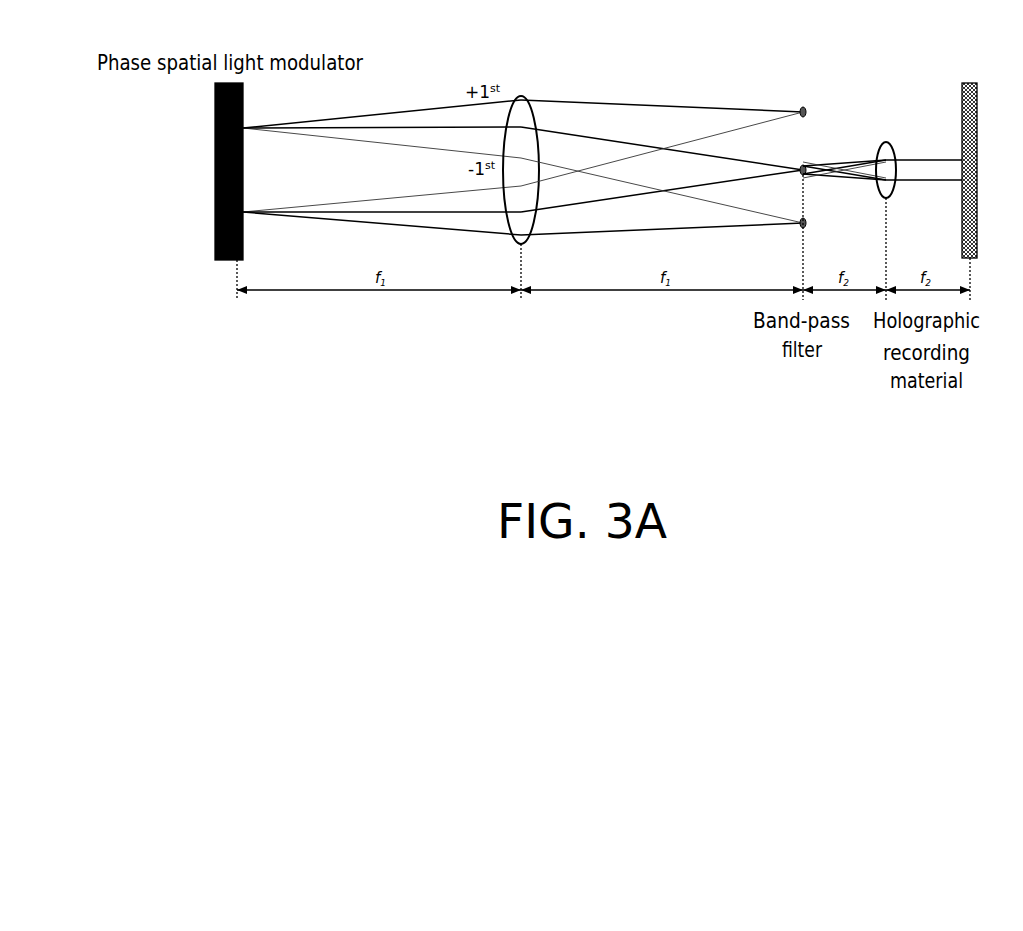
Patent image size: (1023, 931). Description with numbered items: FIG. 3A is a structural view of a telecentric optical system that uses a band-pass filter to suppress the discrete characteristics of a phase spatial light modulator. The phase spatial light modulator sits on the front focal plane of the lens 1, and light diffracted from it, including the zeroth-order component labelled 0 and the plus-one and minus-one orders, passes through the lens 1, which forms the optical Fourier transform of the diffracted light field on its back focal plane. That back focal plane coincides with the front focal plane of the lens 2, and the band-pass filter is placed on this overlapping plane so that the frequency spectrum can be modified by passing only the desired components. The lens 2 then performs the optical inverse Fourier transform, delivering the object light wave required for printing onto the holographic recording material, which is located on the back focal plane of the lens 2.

The 0th order diffracted beam 0 is at (523, 161).
The lens 1 is at (518, 147).
The lens 2 is at (882, 124).